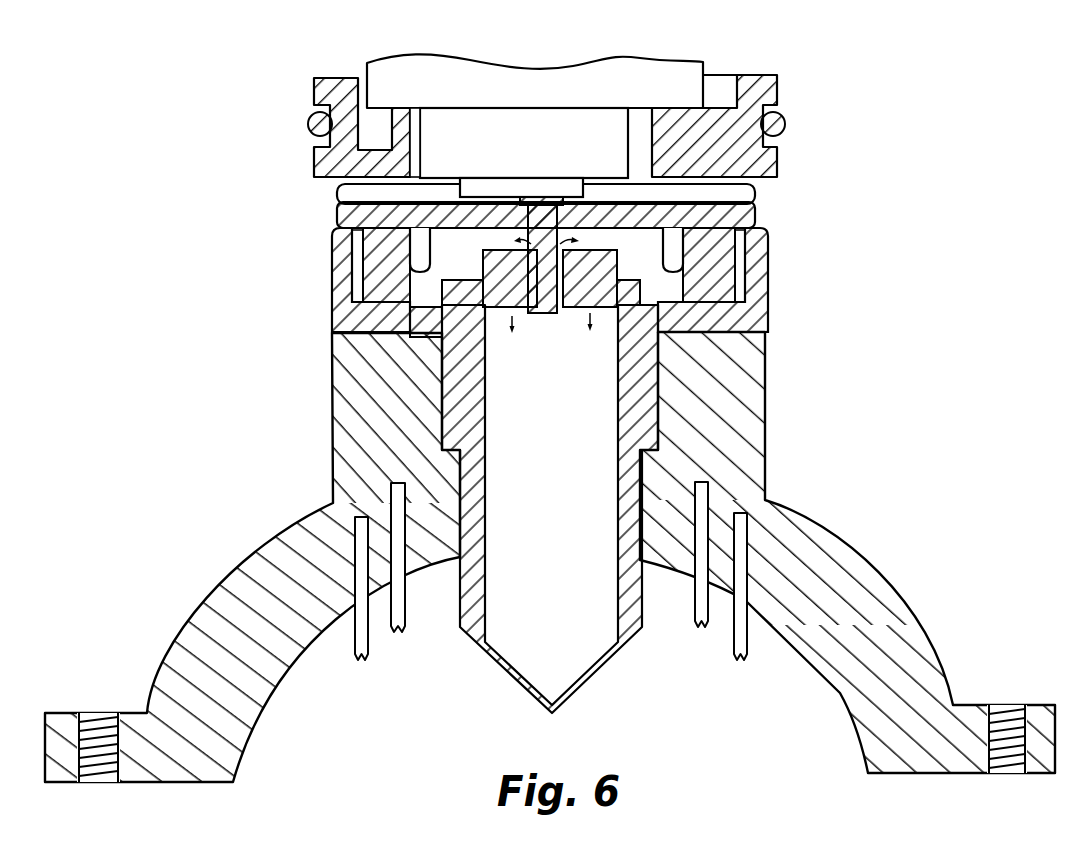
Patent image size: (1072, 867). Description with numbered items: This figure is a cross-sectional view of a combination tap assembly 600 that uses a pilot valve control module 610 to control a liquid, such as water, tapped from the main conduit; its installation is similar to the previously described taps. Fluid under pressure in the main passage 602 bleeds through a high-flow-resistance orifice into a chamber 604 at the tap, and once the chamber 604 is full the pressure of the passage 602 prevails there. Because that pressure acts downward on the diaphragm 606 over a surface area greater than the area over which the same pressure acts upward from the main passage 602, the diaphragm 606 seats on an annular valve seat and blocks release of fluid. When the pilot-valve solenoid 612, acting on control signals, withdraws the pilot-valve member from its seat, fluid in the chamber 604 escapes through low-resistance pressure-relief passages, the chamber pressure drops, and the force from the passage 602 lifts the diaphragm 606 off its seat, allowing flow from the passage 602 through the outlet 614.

The combination tap assembly 600 is at (550, 400).
The main passage 602 is at (503, 378).
The chamber 604 is at (441, 243).
The diaphragm 606 is at (400, 296).
The pilot valve control module 610 is at (338, 98).
The pilot-valve solenoid 612 is at (490, 136).
The outlet 614 is at (418, 328).